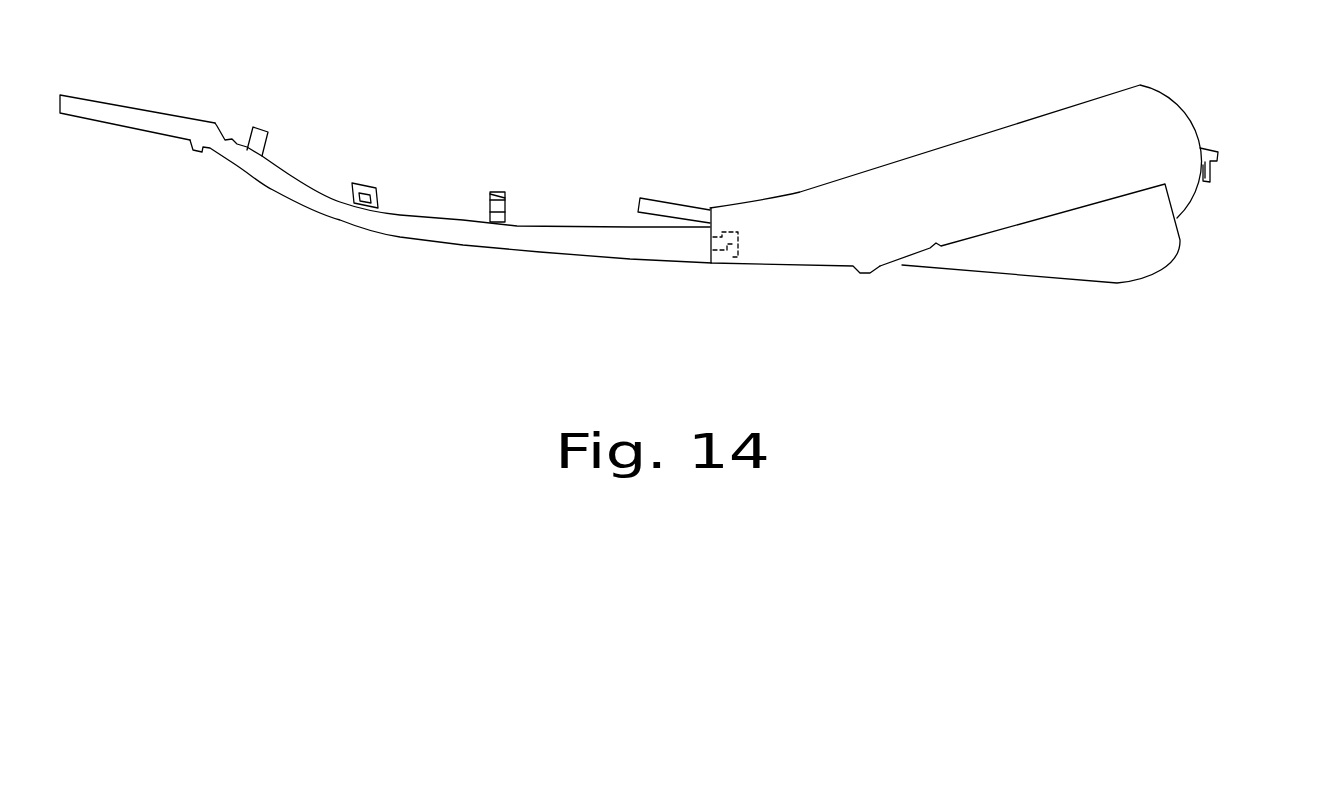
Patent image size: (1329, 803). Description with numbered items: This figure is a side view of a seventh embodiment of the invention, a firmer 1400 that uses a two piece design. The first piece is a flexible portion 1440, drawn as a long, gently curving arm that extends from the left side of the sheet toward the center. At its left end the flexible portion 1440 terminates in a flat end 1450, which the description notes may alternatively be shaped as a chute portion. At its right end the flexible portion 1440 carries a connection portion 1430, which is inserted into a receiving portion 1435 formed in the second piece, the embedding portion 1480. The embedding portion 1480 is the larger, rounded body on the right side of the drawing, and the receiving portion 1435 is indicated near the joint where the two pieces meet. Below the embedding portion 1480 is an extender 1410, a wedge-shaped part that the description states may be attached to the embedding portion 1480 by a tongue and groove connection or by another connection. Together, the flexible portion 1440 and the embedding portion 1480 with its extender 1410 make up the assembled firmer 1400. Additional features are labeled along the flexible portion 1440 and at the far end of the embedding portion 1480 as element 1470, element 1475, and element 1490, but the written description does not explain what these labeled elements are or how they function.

The firmer 1400 is at (688, 113).
The extender 1410 is at (1100, 265).
The connection portion 1430 is at (722, 250).
The receiving portion 1435 is at (735, 233).
The flexible portion 1440 is at (648, 252).
The flat end 1450 is at (183, 135).
The tab 1470 is at (663, 207).
The bracket 1475 is at (500, 192).
The embedding portion 1480 is at (1037, 140).
The clip 1490 is at (1218, 158).